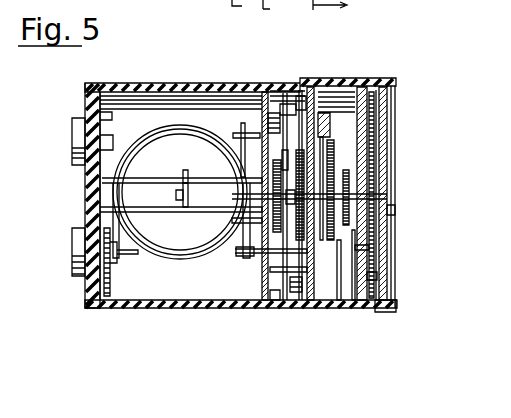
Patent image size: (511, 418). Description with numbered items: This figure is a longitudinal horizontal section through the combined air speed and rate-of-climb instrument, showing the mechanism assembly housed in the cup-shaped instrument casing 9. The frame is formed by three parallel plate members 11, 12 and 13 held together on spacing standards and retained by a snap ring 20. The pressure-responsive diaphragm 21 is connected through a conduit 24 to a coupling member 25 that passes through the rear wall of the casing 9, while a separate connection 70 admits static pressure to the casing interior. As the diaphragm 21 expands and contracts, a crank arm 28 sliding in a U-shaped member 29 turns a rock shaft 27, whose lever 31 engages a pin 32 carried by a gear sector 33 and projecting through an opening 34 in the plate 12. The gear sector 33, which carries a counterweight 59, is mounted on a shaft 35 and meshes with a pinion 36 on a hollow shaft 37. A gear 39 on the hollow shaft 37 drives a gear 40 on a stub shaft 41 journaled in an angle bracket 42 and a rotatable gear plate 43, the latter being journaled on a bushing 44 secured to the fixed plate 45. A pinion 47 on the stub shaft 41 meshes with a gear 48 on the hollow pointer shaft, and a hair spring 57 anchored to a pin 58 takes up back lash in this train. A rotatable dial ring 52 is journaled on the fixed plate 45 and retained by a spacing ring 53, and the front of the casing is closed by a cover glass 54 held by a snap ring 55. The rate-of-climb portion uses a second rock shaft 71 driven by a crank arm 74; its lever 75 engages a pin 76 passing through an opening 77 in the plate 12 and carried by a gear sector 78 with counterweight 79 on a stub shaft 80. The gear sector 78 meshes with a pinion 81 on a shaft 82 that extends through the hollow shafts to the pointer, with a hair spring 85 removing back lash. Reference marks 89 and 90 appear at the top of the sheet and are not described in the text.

The instrument casing 9 is at (83, 200).
The plate member 11 is at (311, 308).
The plate member 12 is at (258, 294).
The plate member 13 is at (103, 173).
The snap ring 20 is at (338, 313).
The pressure-responsive diaphragm 21 is at (197, 243).
The conduit 24 is at (133, 250).
The coupling member 25 is at (64, 267).
The rock shaft 27 is at (157, 207).
The crank arm 28 is at (189, 195).
The U-shaped member 29 is at (170, 198).
The lever 31 is at (238, 263).
The pin 32 is at (260, 258).
The gear sector 33 is at (300, 227).
The opening 34 is at (237, 307).
The shaft 35 is at (277, 313).
The pinion 36 is at (300, 180).
The hollow shaft 37 is at (320, 200).
The gear 39 is at (355, 210).
The gear 40 is at (360, 128).
The stub shaft 41 is at (365, 163).
The angle bracket 42 is at (332, 107).
The rotatable gear plate 43 is at (353, 263).
The bushing 44 is at (393, 210).
The fixed plate 45 is at (368, 247).
The pinion 47 is at (367, 147).
The gear 48 is at (368, 222).
The rotatable dial ring 52 is at (372, 276).
The spacing ring 53 is at (384, 297).
The cover glass 54 is at (384, 97).
The snap ring 55 is at (393, 88).
The hair spring 57 is at (298, 204).
The pin 58 is at (302, 167).
The counterweight 59 is at (293, 307).
The static pressure connection 70 is at (64, 150).
The rock shaft 71 is at (157, 180).
The crank arm 74 is at (184, 180).
The lever 75 is at (242, 126).
The pin 76 is at (257, 127).
The opening 77 is at (266, 112).
The gear sector 78 is at (284, 110).
The counterweight 79 is at (290, 104).
The stub shaft 80 is at (304, 105).
The pinion 81 is at (268, 213).
The shaft 82 is at (270, 177).
The hair spring 85 is at (257, 220).
The section line 89 is at (216, 6).
The section line 90 is at (310, 7).